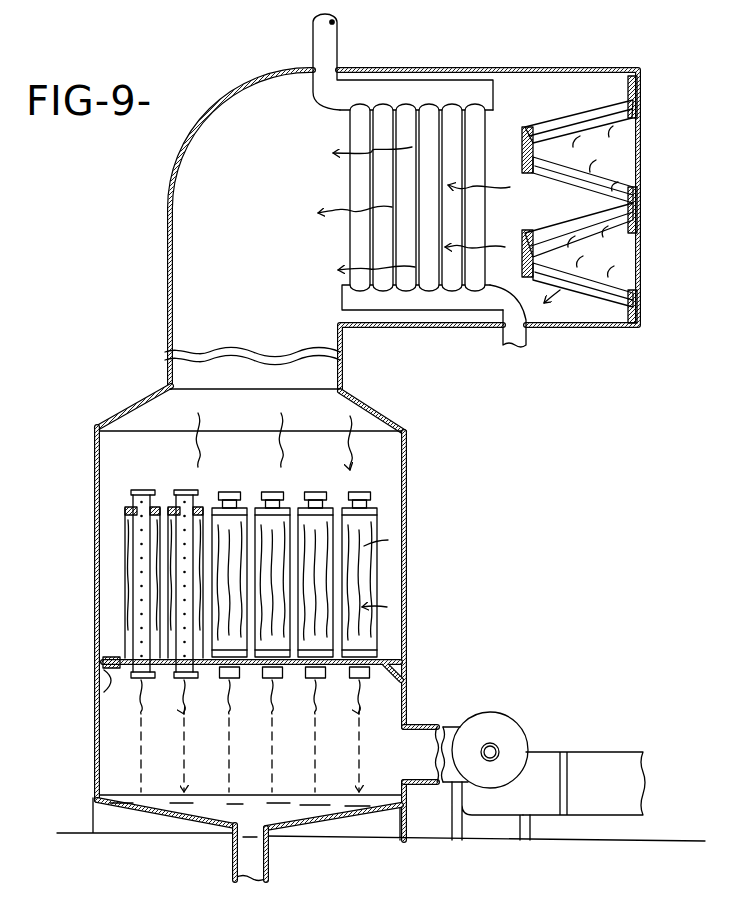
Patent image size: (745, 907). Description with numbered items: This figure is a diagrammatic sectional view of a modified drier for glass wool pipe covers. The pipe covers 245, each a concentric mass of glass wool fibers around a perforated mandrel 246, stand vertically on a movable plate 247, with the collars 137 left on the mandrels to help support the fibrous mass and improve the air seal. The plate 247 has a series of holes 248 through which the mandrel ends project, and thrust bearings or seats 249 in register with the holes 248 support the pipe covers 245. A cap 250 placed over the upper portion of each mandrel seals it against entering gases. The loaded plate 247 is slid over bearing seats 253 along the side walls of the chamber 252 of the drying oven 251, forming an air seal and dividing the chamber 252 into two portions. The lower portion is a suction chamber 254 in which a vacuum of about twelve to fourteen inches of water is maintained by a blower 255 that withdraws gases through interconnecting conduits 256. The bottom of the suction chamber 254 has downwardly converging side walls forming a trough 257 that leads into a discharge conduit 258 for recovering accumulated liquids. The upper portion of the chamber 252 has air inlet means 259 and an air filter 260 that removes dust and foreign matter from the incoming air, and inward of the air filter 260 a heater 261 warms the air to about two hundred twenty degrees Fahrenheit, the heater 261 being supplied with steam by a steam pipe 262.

The heater 261 is at (448, 120).
The air filter 260 is at (628, 232).
The air inlet means 259 is at (637, 257).
The steam pipe 262 is at (526, 340).
The drying oven 251 is at (363, 407).
The chamber 252 is at (388, 454).
The cap 250 is at (178, 468).
The collars 137 is at (125, 510).
The perforated mandrel 246 is at (143, 535).
The pipe covers 245 is at (130, 583).
The bearing seats 253 is at (110, 673).
The thrust bearings or seats 249 is at (115, 690).
The holes 248 is at (136, 738).
The movable plate 247 is at (250, 684).
The trough 257 is at (386, 768).
The suction chamber 254 is at (423, 728).
The interconnecting conduits 256 is at (432, 748).
The blower 255 is at (508, 747).
The discharge conduit 258 is at (233, 848).